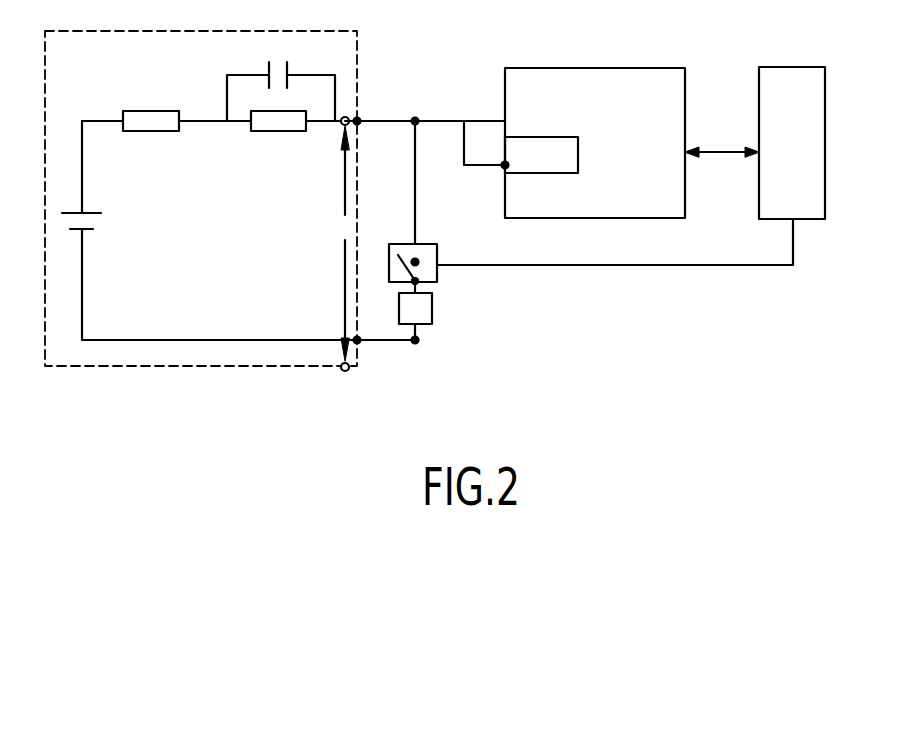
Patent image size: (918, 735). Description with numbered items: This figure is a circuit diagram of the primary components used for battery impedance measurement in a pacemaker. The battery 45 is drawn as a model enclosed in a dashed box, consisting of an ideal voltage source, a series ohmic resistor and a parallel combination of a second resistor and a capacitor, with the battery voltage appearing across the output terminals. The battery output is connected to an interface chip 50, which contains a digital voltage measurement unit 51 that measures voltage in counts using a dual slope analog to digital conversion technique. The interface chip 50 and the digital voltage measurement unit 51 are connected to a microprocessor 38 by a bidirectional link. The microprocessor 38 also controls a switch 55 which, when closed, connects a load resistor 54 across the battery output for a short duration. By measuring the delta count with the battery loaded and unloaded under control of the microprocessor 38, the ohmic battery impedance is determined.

The battery 45 is at (185, 366).
The interface chip 50 is at (575, 68).
The digital voltage measurement unit 51 is at (578, 162).
The switch 55 is at (430, 244).
The resistor 54 is at (432, 306).
The microprocessor 38 is at (780, 67).